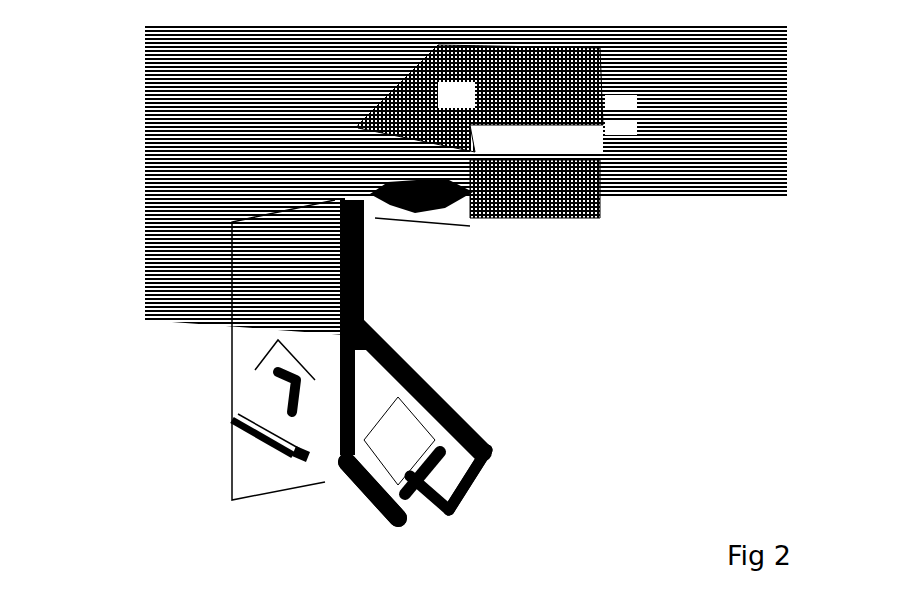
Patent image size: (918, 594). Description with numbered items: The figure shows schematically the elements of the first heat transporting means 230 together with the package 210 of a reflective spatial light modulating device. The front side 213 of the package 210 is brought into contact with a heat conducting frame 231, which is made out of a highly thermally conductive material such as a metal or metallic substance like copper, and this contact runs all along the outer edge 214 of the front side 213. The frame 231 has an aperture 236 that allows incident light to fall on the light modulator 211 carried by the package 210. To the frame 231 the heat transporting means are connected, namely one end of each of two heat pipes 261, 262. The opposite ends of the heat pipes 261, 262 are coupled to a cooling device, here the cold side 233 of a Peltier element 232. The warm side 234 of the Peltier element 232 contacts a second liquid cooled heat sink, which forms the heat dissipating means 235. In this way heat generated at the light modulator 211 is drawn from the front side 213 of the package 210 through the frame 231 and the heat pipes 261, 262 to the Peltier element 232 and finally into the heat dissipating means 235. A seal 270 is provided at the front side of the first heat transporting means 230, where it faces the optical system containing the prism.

The package 210 is at (230, 433).
The light modulator 211 is at (262, 403).
The front side 213 is at (308, 450).
The outer edge 214 is at (255, 380).
The first heat transporting means 230 is at (443, 395).
The heat conducting frame 231 is at (362, 480).
The Peltier element 232 is at (458, 202).
The cold side 233 is at (403, 227).
The warm side 234 is at (389, 184).
The heat dissipating means 235 is at (570, 88).
The aperture 236 is at (388, 460).
The heat pipe 261 is at (340, 346).
The heat pipe 262 is at (366, 342).
The seal 270 is at (490, 450).